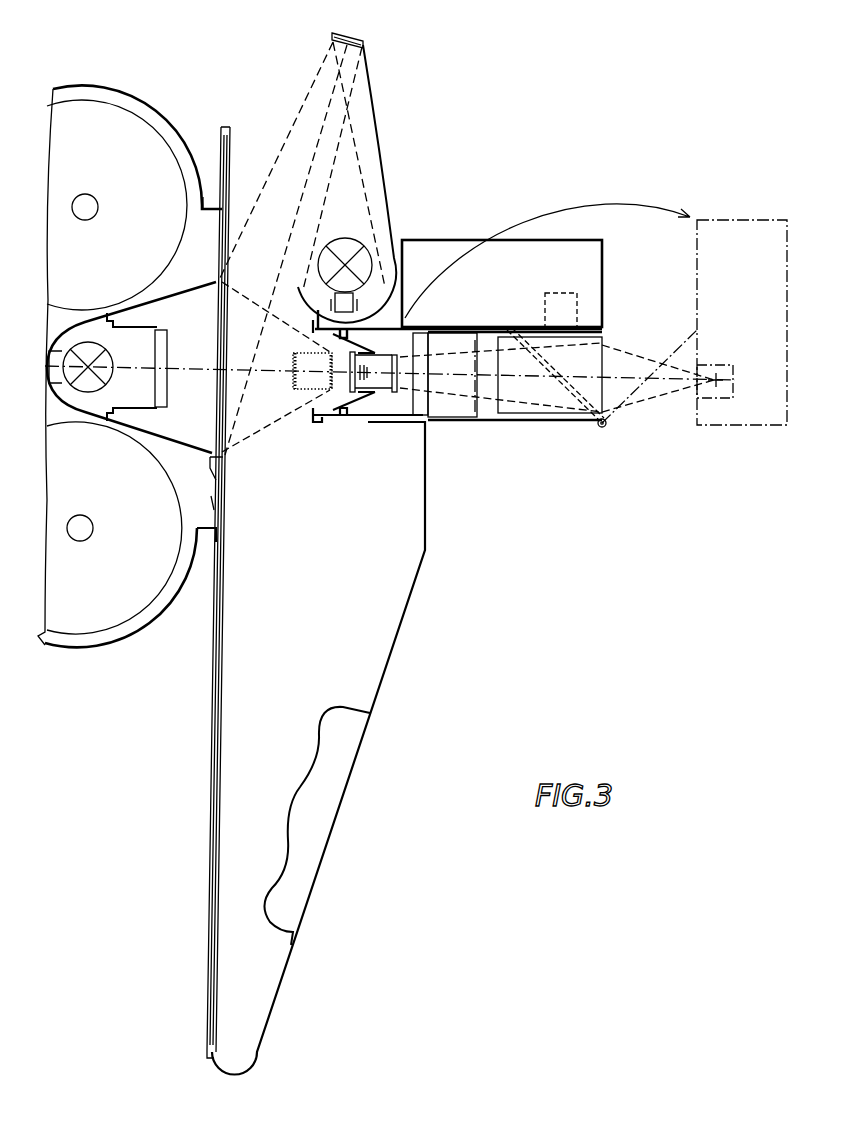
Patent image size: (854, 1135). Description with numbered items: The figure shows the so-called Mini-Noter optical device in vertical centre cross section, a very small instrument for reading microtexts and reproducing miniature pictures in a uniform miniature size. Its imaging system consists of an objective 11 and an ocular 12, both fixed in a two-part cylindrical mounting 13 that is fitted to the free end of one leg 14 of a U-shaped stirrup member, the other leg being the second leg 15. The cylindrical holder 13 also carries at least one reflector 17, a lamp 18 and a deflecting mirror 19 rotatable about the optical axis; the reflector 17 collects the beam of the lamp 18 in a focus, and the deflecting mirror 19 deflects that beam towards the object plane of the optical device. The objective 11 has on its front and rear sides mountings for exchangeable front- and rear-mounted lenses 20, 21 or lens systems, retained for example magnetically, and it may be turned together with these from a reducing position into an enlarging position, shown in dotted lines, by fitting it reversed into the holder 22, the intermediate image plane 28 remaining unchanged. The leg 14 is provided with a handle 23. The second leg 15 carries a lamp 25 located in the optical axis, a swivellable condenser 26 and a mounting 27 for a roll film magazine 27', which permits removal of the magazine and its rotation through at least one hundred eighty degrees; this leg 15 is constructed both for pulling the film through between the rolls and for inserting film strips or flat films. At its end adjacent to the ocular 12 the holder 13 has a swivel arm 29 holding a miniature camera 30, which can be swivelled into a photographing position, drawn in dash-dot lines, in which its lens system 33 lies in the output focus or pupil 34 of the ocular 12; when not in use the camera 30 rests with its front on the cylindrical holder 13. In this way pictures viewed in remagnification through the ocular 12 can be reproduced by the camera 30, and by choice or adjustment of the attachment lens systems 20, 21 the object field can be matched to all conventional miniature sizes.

The objective 11 is at (380, 385).
The ocular 12 is at (540, 398).
The two-part cylindrical mounting 13 is at (445, 420).
The leg of U-shaped stirrup member 14 is at (400, 631).
The second leg of U-shaped stirrup member 15 is at (225, 627).
The reflector 17 is at (362, 306).
The lamp 18 is at (352, 253).
The deflecting mirror 19 is at (351, 37).
The front-mounted lens 20 is at (340, 392).
The rear-mounted lens 21 is at (395, 394).
The holder 22 is at (353, 396).
The handle 23 is at (322, 818).
The lamp 25 is at (86, 345).
The swivellable condenser 26 is at (163, 340).
The mounting for roll film magazine 27 is at (233, 512).
The roll film magazine 27' is at (133, 382).
The intermediate image plane 28 is at (478, 392).
The swivel arm 29 is at (577, 422).
The miniature camera 30 is at (484, 287).
The lens system 33 is at (563, 308).
The output focus or pupil 34 is at (716, 382).